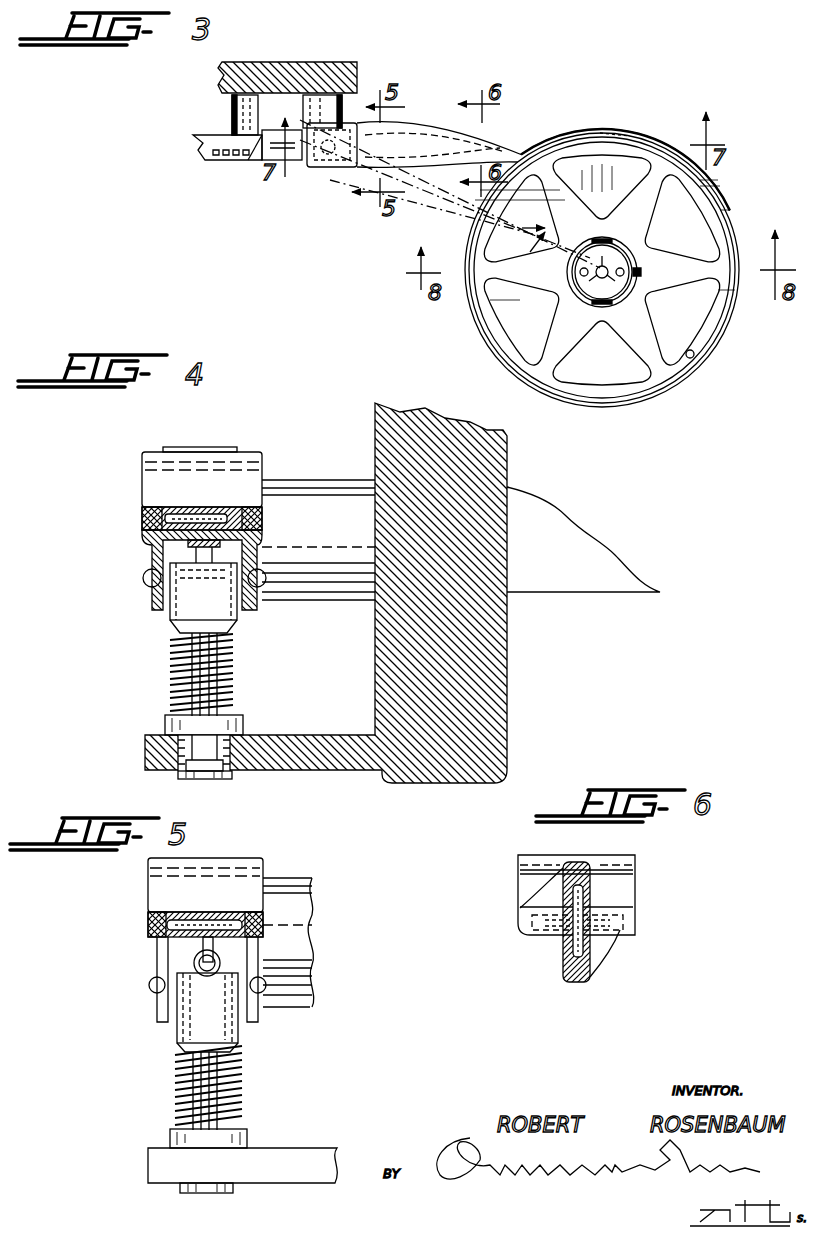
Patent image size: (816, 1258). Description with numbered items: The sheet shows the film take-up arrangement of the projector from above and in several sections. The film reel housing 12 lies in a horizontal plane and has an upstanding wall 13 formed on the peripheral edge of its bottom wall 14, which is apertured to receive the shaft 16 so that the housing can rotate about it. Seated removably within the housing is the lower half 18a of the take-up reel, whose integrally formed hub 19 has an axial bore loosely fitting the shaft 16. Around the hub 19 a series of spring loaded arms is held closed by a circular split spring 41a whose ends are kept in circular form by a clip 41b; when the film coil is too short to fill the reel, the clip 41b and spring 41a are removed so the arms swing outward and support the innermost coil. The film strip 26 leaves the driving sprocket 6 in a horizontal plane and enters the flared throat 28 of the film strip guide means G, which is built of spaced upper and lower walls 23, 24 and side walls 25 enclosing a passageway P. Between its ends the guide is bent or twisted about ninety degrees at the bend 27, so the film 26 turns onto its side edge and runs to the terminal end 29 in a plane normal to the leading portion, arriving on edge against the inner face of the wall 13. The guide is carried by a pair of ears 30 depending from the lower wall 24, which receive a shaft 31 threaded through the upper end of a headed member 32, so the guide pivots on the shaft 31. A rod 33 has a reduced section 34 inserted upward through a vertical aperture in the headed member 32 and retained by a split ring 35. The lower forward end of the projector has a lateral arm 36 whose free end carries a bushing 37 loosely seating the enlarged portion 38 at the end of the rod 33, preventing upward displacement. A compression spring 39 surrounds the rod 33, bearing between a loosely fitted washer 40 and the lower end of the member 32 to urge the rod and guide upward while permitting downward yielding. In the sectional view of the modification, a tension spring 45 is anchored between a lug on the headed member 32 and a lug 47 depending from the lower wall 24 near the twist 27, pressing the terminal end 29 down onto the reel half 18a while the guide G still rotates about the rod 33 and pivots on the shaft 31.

In FIG. 3, the film reel housing 12 is at (665, 395).
In FIG. 3, the upstanding wall 13 is at (472, 258).
In FIG. 3, the bottom wall 14 is at (698, 236).
In FIG. 3, the shaft 16 is at (604, 292).
In FIG. 3, the lower half of take-up reel 18a is at (716, 292).
In FIG. 3, the hub 19 is at (645, 284).
In FIG. 3, the circular split spring 41a is at (618, 250).
In FIG. 3, the clip 41b is at (641, 274).
In FIG. 3, the film strip 26 is at (215, 149).
In FIG. 4, the film strip 26 is at (222, 513).
In FIG. 3, the bend or twist 27 is at (448, 140).
In FIG. 6, the bend or twist 27 is at (543, 885).
In FIG. 3, the flared throat 28 is at (323, 167).
In FIG. 4, the flared throat 28 is at (250, 452).
In FIG. 5, the flared throat 28 is at (258, 858).
In FIG. 6, the flared throat 28 is at (535, 857).
In FIG. 3, the terminal end 29 is at (600, 142).
In FIG. 3, the film strip guide means G is at (418, 118).
In FIG. 4, the enclosed passageway P is at (165, 510).
In FIG. 5, the enclosed passageway P is at (160, 920).
In FIG. 6, the enclosed passageway P is at (592, 977).
In FIG. 4, the driving sprocket 6 is at (186, 448).
In FIG. 4, the upper wall 23 is at (262, 506).
In FIG. 5, the upper wall 23 is at (176, 918).
In FIG. 6, the upper wall 23 is at (590, 942).
In FIG. 4, the side walls 25 is at (150, 519).
In FIG. 5, the side walls 25 is at (148, 926).
In FIG. 6, the side walls 25 is at (574, 862).
In FIG. 4, the lower wall 24 is at (154, 546).
In FIG. 5, the lower wall 24 is at (160, 942).
In FIG. 6, the lower wall 24 is at (563, 950).
In FIG. 4, the ears 30 is at (257, 556).
In FIG. 5, the ears 30 is at (258, 967).
In FIG. 4, the shaft 31 is at (160, 570).
In FIG. 4, the headed member 32 is at (176, 608).
In FIG. 5, the headed member 32 is at (224, 1017).
In FIG. 4, the rod 33 is at (210, 665).
In FIG. 5, the rod 33 is at (193, 1082).
In FIG. 4, the reduced section 34 is at (238, 600).
In FIG. 4, the split ring 35 is at (268, 585).
In FIG. 4, the arm 36 is at (340, 745).
In FIG. 5, the arm 36 is at (150, 1158).
In FIG. 4, the bushing 37 is at (176, 776).
In FIG. 5, the bushing 37 is at (217, 1190).
In FIG. 4, the enlarged portion 38 is at (218, 778).
In FIG. 4, the compression spring 39 is at (233, 668).
In FIG. 5, the compression spring 39 is at (178, 1098).
In FIG. 4, the washer 40 is at (172, 717).
In FIG. 5, the washer 40 is at (248, 1138).
In FIG. 5, the tension spring 45 is at (195, 963).
In FIG. 5, the lug 47 is at (214, 950).